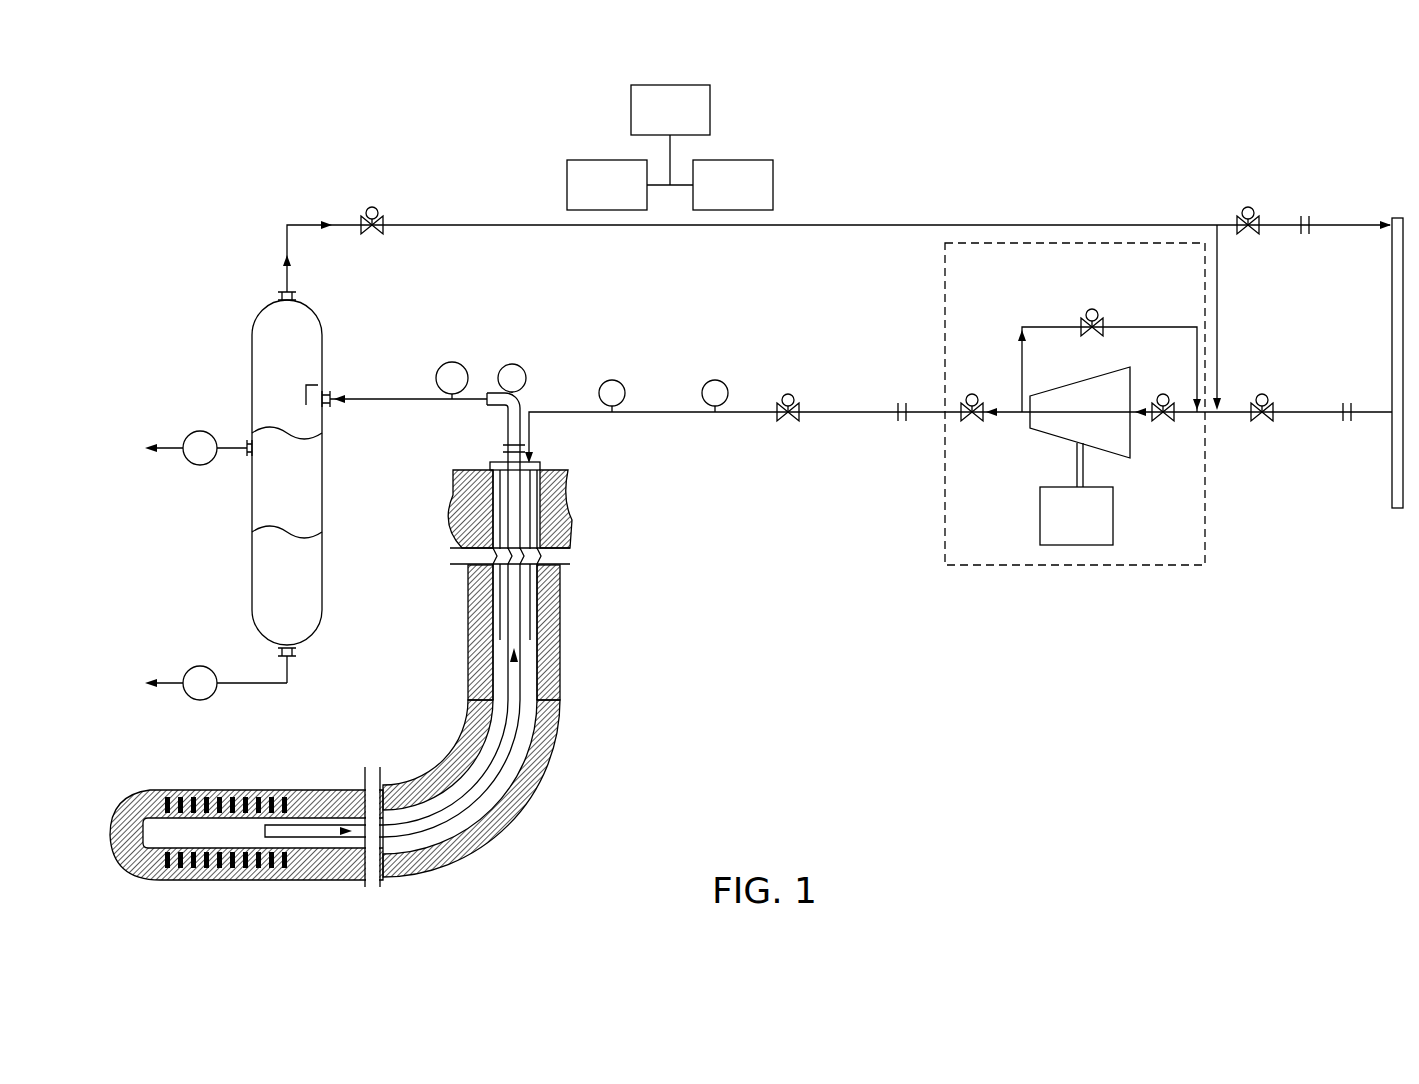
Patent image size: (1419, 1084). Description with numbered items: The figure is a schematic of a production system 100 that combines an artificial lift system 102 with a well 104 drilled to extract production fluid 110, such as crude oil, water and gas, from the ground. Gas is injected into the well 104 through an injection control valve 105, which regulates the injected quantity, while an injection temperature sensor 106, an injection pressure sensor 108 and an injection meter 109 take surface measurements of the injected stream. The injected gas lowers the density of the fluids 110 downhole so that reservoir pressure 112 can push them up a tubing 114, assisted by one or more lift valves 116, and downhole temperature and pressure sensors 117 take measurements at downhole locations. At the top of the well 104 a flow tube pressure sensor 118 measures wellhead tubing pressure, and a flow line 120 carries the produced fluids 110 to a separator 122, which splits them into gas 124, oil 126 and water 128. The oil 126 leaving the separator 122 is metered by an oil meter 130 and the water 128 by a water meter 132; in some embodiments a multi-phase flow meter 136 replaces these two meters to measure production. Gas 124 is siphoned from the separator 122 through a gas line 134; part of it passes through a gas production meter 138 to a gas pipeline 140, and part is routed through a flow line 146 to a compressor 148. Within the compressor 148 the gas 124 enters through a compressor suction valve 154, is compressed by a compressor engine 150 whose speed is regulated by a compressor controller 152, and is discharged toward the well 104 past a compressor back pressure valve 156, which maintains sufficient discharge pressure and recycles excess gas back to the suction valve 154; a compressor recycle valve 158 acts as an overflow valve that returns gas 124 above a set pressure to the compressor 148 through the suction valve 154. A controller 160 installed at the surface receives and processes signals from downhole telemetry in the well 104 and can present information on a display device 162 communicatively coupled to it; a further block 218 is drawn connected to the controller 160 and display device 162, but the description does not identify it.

The production system 100 is at (352, 120).
The artificial lift system 102 is at (1212, 136).
The well 104 is at (500, 490).
The injection control valve 105 is at (788, 423).
The injection temperature sensor 106 is at (713, 378).
The injection pressure sensor 108 is at (610, 378).
The injection meter 109 is at (902, 423).
The production fluid 110 is at (160, 795).
The reservoir pressure 112 is at (130, 860).
The tubing 114 is at (455, 510).
The lift valves 116 is at (545, 760).
The downhole temperature and pressure sensors 117 is at (520, 822).
The flow tube pressure sensor 118 is at (512, 364).
The flow line 120 is at (336, 395).
The separator 122 is at (252, 330).
The gas 124 is at (252, 412).
The oil 126 is at (252, 516).
The water 128 is at (252, 583).
The oil meter 130 is at (183, 440).
The water meter 132 is at (183, 672).
The gas line 134 is at (300, 222).
The multi-phase flow meter 136 is at (452, 362).
The gas production meter 138 is at (1305, 214).
The gas pipeline 140 is at (1398, 510).
The flow line 146 is at (1218, 316).
The compressor 148 is at (1075, 566).
The compressor engine 150 is at (1043, 390).
The compressor controller 152 is at (1076, 494).
The compressor suction valve 154 is at (1160, 392).
The compressor back pressure valve 156 is at (970, 392).
The compressor recycle valve 158 is at (1090, 310).
The controller 160 is at (630, 185).
The display device 162 is at (733, 185).
The user interface 218 is at (670, 135).